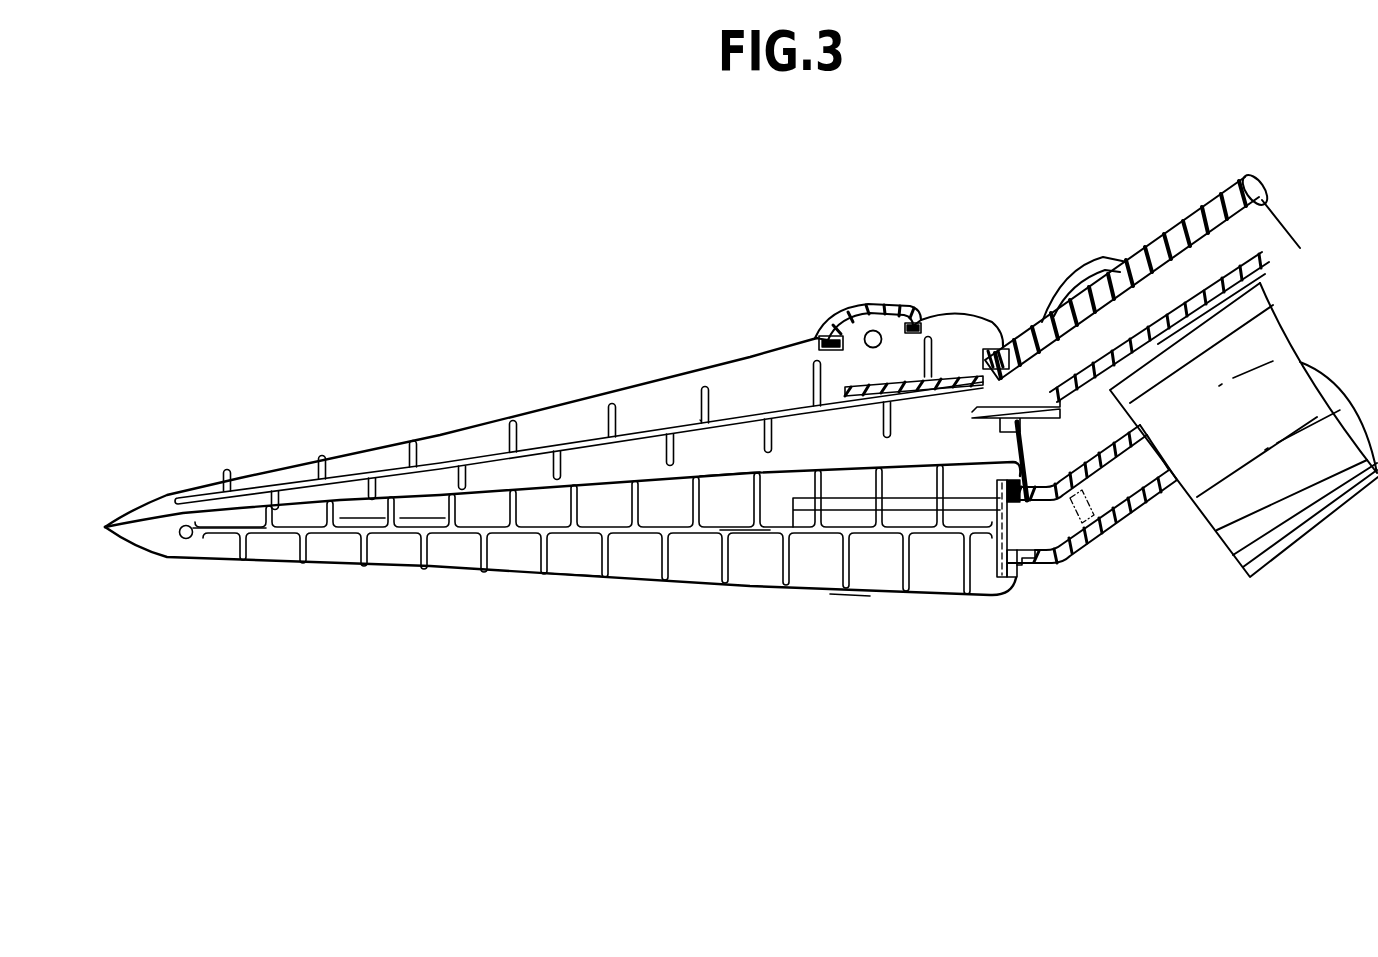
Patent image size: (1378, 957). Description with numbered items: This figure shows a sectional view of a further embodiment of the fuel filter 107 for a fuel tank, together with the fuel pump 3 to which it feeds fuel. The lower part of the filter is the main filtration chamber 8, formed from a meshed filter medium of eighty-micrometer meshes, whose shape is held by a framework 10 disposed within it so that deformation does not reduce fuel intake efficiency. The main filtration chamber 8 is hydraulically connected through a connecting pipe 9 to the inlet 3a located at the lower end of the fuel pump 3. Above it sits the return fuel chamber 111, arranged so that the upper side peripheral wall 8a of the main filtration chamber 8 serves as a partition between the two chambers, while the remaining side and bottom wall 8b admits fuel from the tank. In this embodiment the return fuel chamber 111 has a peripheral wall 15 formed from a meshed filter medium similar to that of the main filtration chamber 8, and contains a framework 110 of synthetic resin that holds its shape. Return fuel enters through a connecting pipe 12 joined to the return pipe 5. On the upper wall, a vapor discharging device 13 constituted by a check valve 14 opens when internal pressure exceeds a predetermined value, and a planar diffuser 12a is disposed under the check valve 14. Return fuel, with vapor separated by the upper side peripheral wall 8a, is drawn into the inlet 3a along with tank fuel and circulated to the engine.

The fuel pump 3 is at (1305, 527).
The inlet 3a is at (1145, 474).
The return pipe 5 is at (1178, 228).
The main filtration chamber 8 is at (686, 600).
The upper side peripheral wall 8a is at (722, 474).
The remaining peripheral wall 8b is at (568, 576).
The connecting pipe 9 is at (1098, 539).
The framework 10 is at (742, 548).
The connecting pipe 12 is at (1012, 352).
The diffuser 12a is at (960, 363).
The vapor discharging device 13 is at (872, 300).
The check valve 14 is at (866, 297).
The peripheral wall 15 is at (497, 421).
The filter 107 is at (845, 606).
The framework 110 is at (575, 445).
The return fuel chamber 111 is at (648, 406).